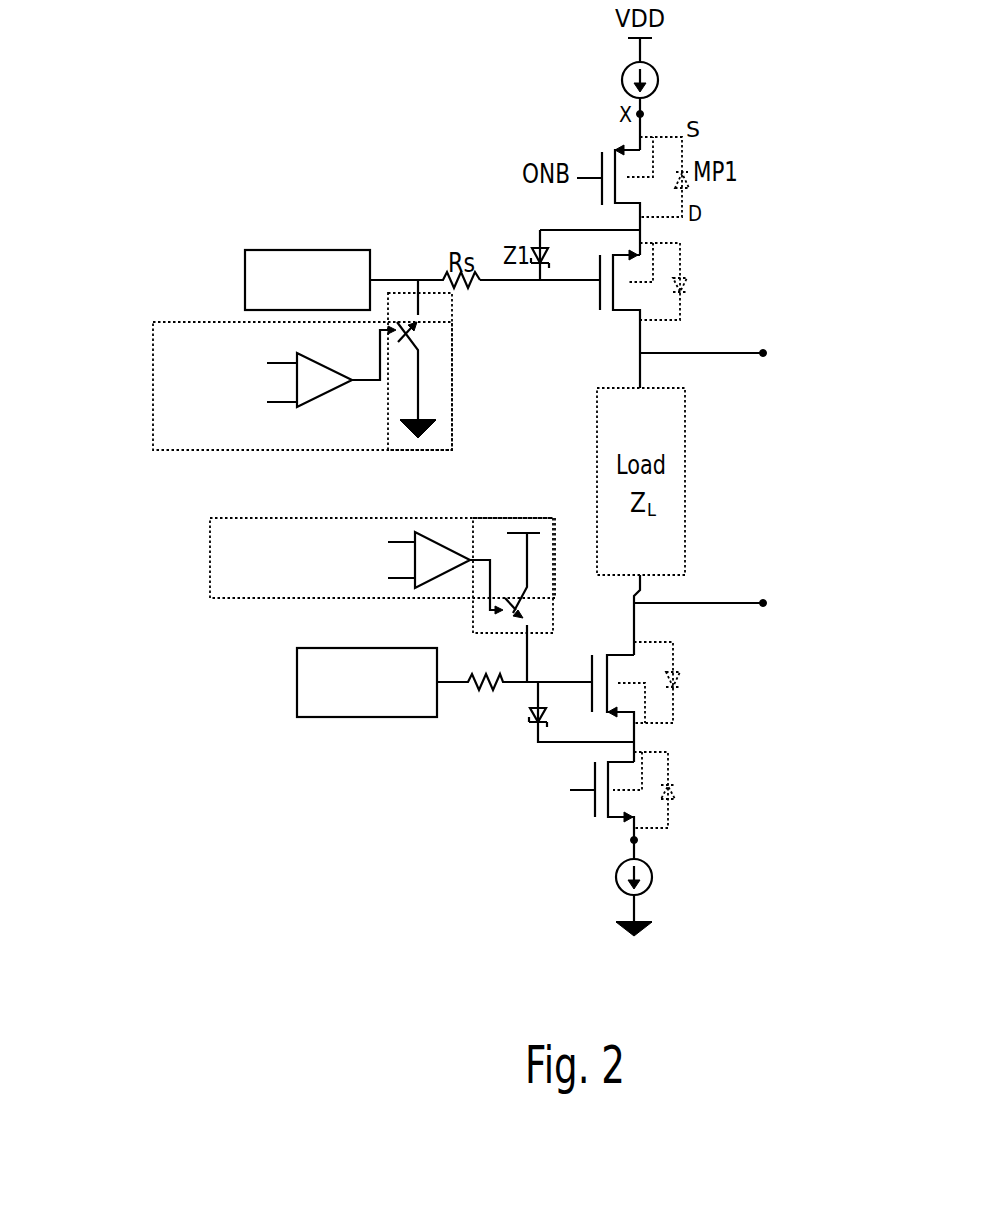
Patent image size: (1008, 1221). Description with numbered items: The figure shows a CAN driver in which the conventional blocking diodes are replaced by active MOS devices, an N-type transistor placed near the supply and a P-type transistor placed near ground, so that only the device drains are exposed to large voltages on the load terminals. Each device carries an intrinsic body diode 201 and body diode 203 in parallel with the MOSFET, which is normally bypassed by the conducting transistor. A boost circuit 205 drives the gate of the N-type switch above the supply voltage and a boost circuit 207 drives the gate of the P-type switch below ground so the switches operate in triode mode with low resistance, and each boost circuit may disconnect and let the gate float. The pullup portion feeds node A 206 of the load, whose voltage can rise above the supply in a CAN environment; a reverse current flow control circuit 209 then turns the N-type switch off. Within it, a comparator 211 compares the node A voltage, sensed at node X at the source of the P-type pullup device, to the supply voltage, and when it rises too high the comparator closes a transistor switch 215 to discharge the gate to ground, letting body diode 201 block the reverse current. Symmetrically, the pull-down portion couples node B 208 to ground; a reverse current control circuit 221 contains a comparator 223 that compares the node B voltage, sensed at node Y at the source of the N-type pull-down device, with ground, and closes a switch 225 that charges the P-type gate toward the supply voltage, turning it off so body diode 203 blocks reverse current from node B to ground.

The body diode 201 is at (700, 299).
The body diode 203 is at (692, 699).
The boost circuit 205 is at (245, 282).
The node A 206 is at (763, 353).
The boost circuit 207 is at (297, 682).
The node B 208 is at (763, 603).
The reverse current flow control circuit 209 is at (153, 398).
The comparator 211 is at (313, 405).
The transistor switch 215 is at (437, 339).
The reverse current control circuit 221 is at (210, 555).
The comparator 223 is at (440, 533).
The switch 225 is at (538, 582).